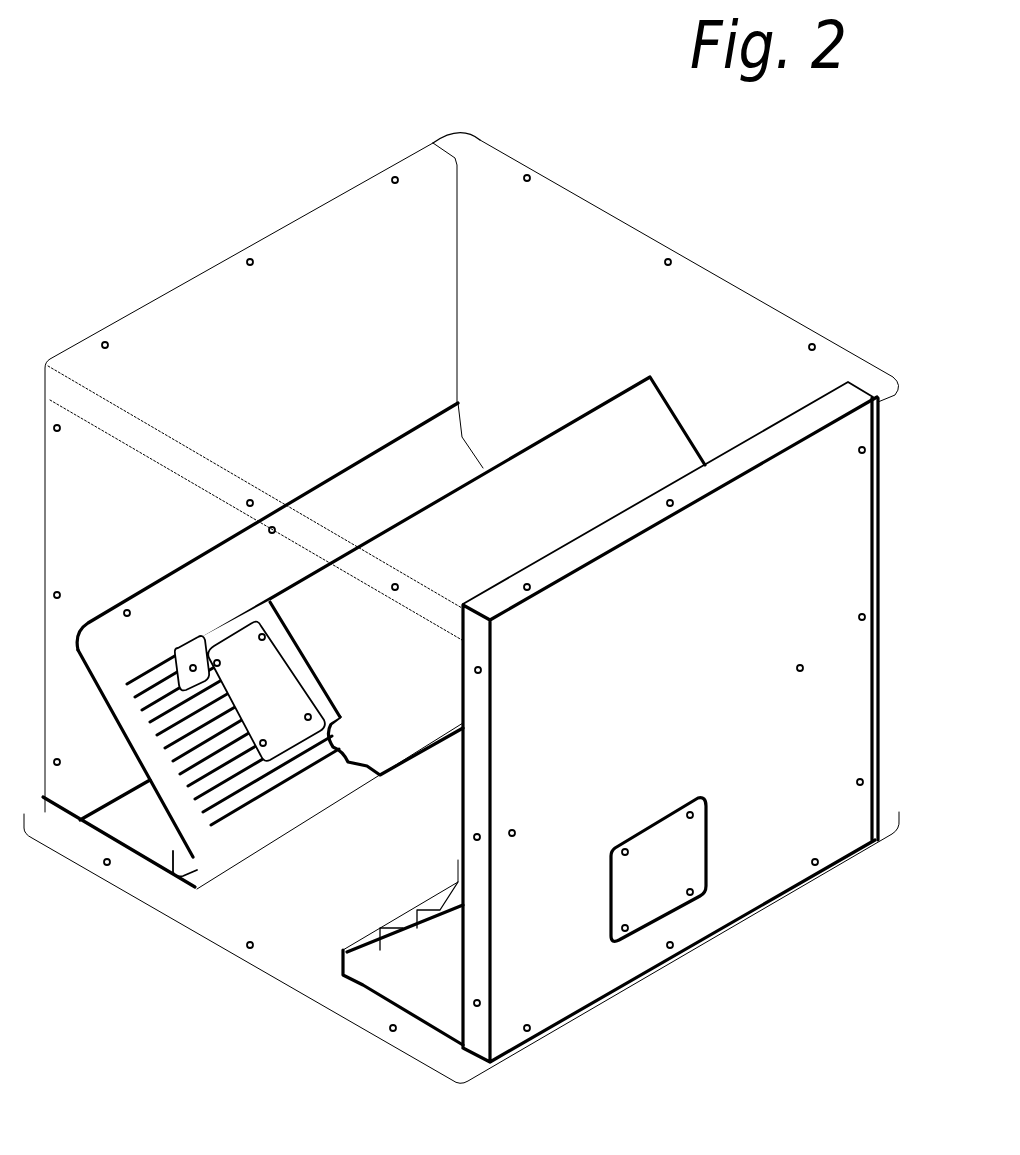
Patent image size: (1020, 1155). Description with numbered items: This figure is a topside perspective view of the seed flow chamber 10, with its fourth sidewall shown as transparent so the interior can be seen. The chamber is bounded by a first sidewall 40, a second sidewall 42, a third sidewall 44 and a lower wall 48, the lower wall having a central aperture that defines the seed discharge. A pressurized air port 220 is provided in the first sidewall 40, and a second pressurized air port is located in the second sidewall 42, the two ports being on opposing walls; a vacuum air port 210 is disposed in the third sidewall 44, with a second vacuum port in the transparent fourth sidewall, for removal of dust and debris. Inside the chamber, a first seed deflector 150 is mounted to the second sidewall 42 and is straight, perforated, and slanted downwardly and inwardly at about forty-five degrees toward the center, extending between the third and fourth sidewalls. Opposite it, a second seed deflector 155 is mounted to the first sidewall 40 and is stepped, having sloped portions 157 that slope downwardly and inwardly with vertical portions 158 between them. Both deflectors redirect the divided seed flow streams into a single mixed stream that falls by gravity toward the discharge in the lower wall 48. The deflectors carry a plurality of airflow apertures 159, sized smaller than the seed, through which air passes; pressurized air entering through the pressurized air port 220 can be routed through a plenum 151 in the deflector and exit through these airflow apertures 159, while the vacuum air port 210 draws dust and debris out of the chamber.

The seed flow chamber 10 is at (272, 222).
The first sidewall 40 is at (681, 682).
The second sidewall 42 is at (183, 387).
The third sidewall 44 is at (592, 353).
The lower wall 48 is at (368, 1033).
The first seed deflector 150 is at (137, 757).
The plenum 151 is at (110, 842).
The second seed deflector 155 is at (366, 928).
The sloped portions 157 is at (440, 895).
The vertical portions 158 is at (412, 913).
The airflow apertures 159 is at (248, 822).
The vacuum air port 210 is at (283, 706).
The pressurized air port 220 is at (707, 873).